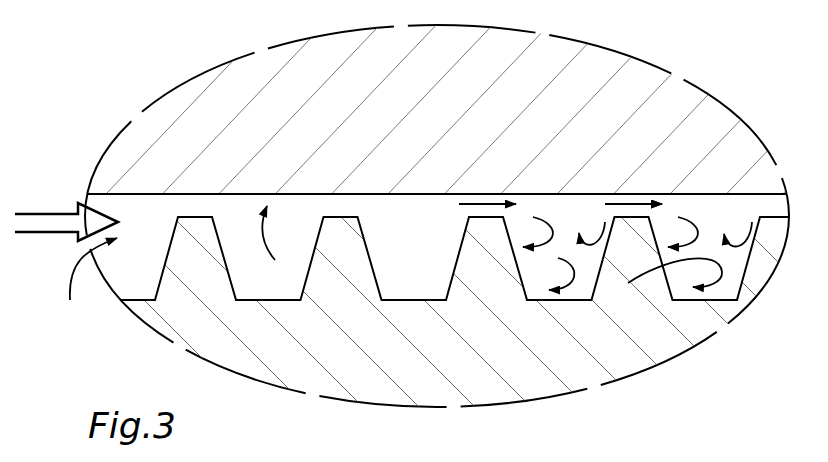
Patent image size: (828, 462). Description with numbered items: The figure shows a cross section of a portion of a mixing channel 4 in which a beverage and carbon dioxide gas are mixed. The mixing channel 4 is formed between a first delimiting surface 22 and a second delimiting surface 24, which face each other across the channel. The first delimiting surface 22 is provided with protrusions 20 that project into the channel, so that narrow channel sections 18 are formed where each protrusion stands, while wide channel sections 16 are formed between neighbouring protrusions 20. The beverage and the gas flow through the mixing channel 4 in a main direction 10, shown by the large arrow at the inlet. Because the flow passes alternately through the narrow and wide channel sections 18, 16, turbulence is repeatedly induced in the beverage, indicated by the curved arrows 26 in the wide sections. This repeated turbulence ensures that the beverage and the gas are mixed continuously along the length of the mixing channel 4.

The mixing channel 4 is at (91, 283).
The main direction 10 is at (43, 222).
The wide channel sections 16 is at (247, 271).
The narrow channel sections 18 is at (197, 207).
The protrusions 20 is at (338, 226).
The first delimiting surface 22 is at (415, 292).
The second delimiting surface 24 is at (282, 245).
The arrows 26 is at (607, 232).